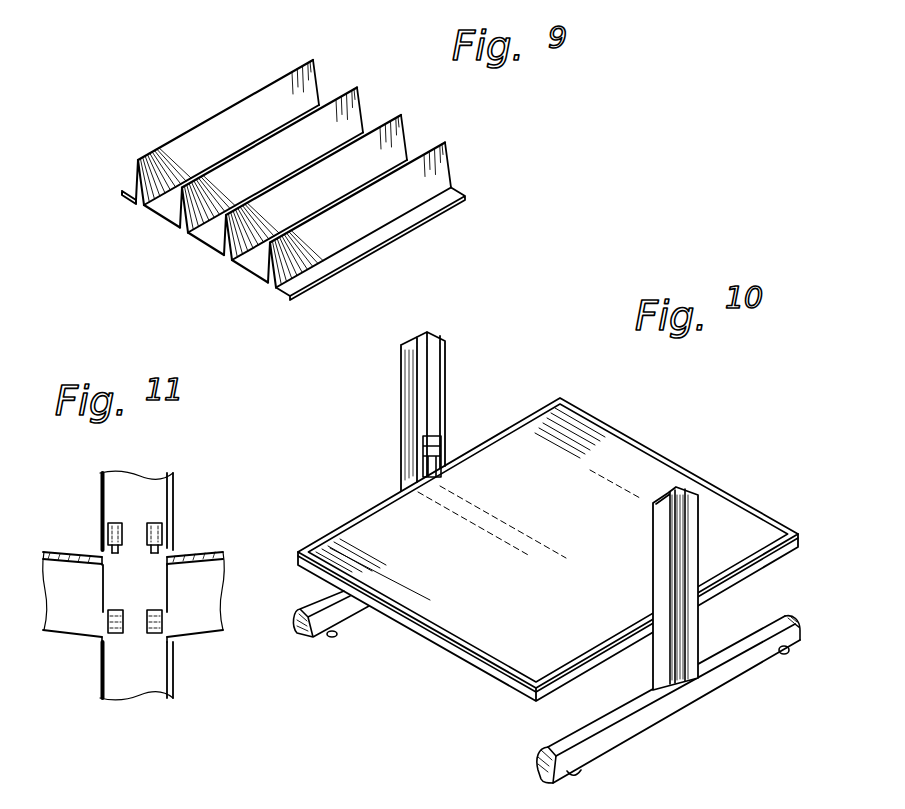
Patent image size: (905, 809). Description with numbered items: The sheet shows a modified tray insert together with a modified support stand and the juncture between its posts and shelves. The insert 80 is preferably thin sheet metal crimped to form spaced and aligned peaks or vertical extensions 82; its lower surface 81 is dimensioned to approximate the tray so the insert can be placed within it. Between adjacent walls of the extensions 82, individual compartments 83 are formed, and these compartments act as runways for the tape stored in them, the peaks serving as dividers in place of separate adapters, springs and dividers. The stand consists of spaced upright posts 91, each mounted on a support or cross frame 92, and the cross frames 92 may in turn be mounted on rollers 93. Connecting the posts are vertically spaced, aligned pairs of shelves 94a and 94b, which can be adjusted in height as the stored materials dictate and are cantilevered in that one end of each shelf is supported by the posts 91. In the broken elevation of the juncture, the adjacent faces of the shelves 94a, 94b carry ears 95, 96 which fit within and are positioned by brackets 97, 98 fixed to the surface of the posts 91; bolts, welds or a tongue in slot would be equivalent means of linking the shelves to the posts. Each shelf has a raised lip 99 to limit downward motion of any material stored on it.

In FIG. 9, the insert 80 is at (453, 142).
In FIG. 9, the lower surface 81 is at (128, 192).
In FIG. 9, the peaks or vertical extensions 82 is at (402, 113).
In FIG. 9, the compartments 83 is at (256, 265).
In FIG. 10, the upright posts 91 is at (448, 362).
In FIG. 11, the upright posts 91 is at (177, 483).
In FIG. 10, the support or cross frames 92 is at (787, 620).
In FIG. 10, the rollers 93 is at (570, 771).
In FIG. 10, the shelf 94a is at (655, 476).
In FIG. 10, the shelf 94b is at (390, 522).
In FIG. 11, the ear 95 is at (151, 548).
In FIG. 11, the ear 96 is at (165, 623).
In FIG. 10, the bracket 97 is at (442, 436).
In FIG. 11, the bracket 97 is at (157, 523).
In FIG. 11, the bracket 98 is at (157, 611).
In FIG. 10, the raised lip 99 is at (618, 434).